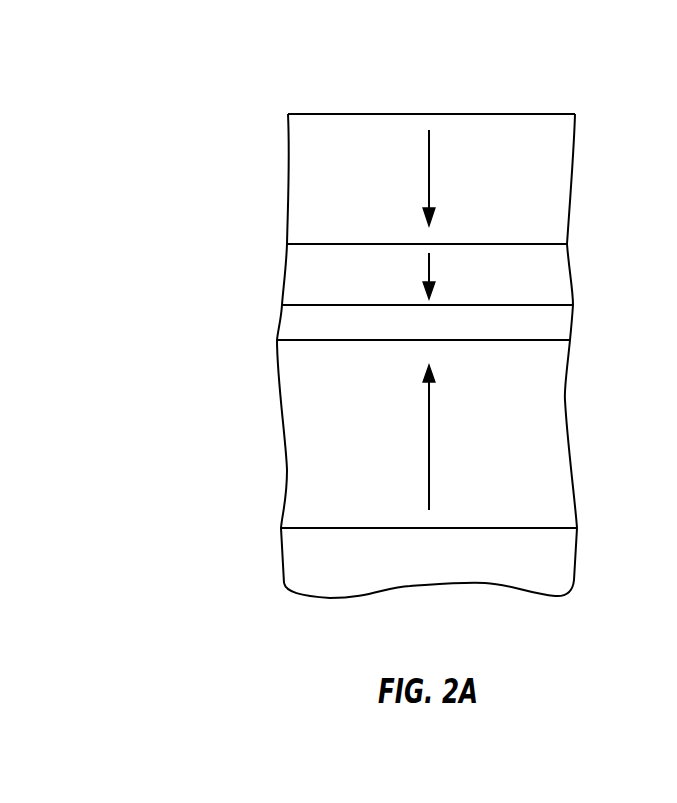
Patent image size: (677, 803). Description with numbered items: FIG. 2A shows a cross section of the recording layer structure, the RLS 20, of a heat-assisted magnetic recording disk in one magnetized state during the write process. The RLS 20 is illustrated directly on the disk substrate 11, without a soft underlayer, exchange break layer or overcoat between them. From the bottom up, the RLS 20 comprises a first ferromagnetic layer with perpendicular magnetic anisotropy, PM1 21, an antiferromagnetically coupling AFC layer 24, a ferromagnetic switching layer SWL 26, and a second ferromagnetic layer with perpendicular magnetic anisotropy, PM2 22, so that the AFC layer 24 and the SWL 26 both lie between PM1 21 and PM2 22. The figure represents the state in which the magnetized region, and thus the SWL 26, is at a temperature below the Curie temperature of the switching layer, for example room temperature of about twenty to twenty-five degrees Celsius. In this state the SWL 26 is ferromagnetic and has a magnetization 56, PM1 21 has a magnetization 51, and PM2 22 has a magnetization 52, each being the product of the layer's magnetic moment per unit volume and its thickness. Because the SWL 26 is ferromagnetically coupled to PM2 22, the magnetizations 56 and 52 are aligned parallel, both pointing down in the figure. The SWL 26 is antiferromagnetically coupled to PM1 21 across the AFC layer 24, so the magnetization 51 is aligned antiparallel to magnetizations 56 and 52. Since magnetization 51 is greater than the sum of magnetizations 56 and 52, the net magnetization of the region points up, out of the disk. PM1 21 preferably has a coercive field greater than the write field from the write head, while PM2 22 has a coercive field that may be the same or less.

The recording layer structure (RLS) 20 is at (253, 113).
The second ferromagnetic layer with perpendicular magnetic anisotropy (PM2) 22 is at (555, 181).
The ferromagnetic switching layer (SWL) 26 is at (556, 274).
The antiferromagnetically coupling (AFC) layer 24 is at (560, 323).
The first ferromagnetic layer with perpendicular magnetic anisotropy (PM1) 21 is at (555, 430).
The substrate 11 is at (563, 563).
The magnetization of PM2 52 is at (431, 177).
The magnetization of SWL 56 is at (431, 280).
The magnetization of PM1 51 is at (431, 415).